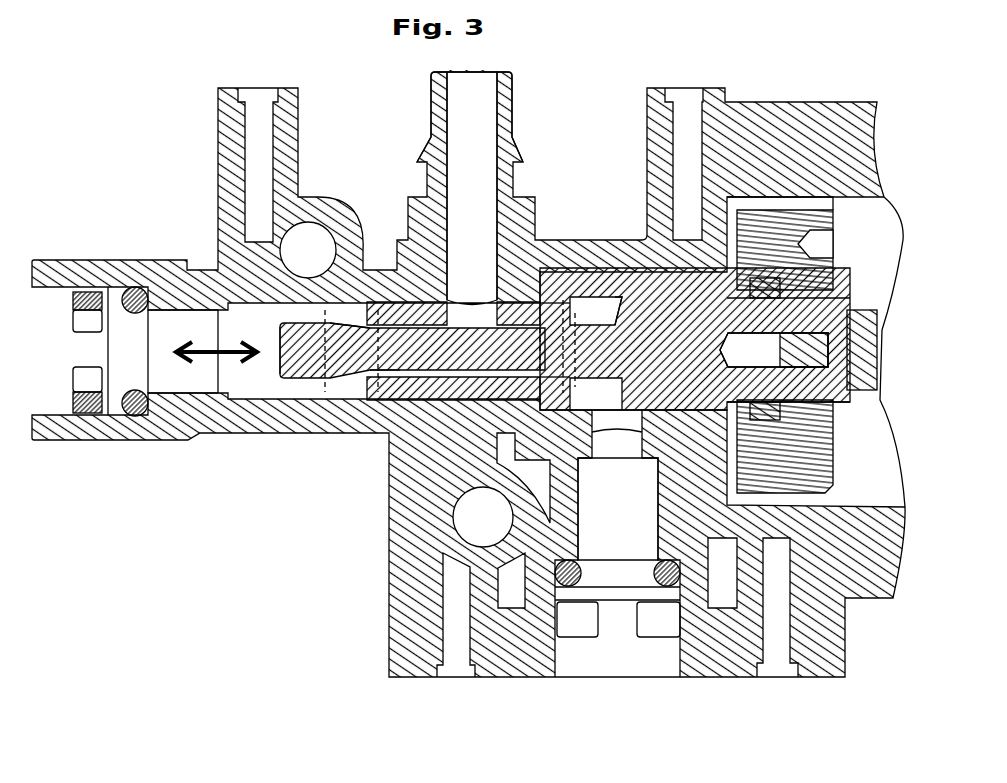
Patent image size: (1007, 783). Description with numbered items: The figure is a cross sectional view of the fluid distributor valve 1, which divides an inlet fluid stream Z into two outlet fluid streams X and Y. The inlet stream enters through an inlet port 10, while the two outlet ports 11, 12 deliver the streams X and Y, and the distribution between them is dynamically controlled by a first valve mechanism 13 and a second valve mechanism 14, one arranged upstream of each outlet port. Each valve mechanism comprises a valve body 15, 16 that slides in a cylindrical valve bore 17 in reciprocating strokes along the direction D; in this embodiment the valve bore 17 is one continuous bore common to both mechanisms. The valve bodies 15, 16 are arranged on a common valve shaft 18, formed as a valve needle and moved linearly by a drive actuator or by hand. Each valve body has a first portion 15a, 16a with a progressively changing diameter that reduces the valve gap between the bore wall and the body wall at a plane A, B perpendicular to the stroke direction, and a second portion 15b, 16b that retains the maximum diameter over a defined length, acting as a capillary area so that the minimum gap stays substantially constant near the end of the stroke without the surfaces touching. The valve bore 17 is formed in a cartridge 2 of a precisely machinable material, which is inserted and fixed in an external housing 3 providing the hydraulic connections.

The fluid distributor valve 1 is at (205, 72).
The cartridge 2 is at (723, 280).
The external housing 3 is at (837, 148).
The inlet port 10 is at (468, 160).
The outlet port 11 is at (163, 360).
The outlet port 12 is at (612, 507).
The first valve mechanism 13 is at (330, 310).
The second valve mechanism 14 is at (563, 342).
The valve body 15 is at (320, 357).
The first portion 15a is at (357, 325).
The second portion 15b is at (294, 320).
The valve body 16 is at (547, 332).
The first portion 16a is at (546, 378).
The second portion 16b is at (593, 317).
The cylindrical valve bore 17 is at (366, 374).
The valve shaft 18 is at (737, 318).
The plane A is at (374, 384).
The plane B is at (560, 313).